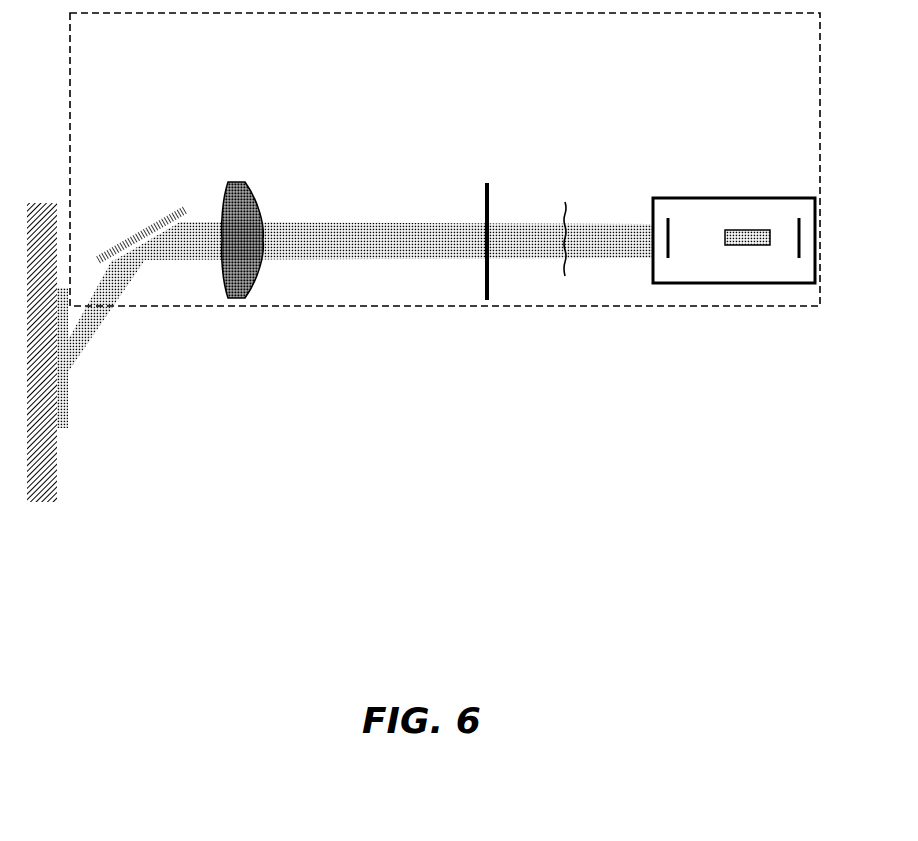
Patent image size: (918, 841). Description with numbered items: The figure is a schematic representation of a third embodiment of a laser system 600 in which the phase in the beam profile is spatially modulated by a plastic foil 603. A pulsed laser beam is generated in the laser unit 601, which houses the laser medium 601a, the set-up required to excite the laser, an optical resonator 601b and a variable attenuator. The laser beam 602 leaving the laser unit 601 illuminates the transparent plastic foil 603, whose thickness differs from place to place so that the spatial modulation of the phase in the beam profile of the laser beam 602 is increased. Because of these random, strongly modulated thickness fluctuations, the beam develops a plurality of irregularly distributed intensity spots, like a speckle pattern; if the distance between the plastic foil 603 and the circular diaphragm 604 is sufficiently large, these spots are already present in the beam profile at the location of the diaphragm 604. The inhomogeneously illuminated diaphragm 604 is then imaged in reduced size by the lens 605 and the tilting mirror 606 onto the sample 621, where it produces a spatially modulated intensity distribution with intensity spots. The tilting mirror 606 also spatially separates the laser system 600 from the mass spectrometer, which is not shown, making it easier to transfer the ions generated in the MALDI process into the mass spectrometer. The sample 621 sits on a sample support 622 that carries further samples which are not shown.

The laser system 600 is at (520, 322).
The laser unit 601 is at (775, 171).
The laser medium 601a is at (724, 210).
The optical resonator 601b is at (787, 269).
The laser beam 602 is at (620, 202).
The plastic foil 603 is at (565, 163).
The circular diaphragm 604 is at (487, 165).
The lens 605 is at (236, 166).
The tilting mirror 606 is at (137, 198).
The sample 621 is at (90, 413).
The sample support 622 is at (70, 500).